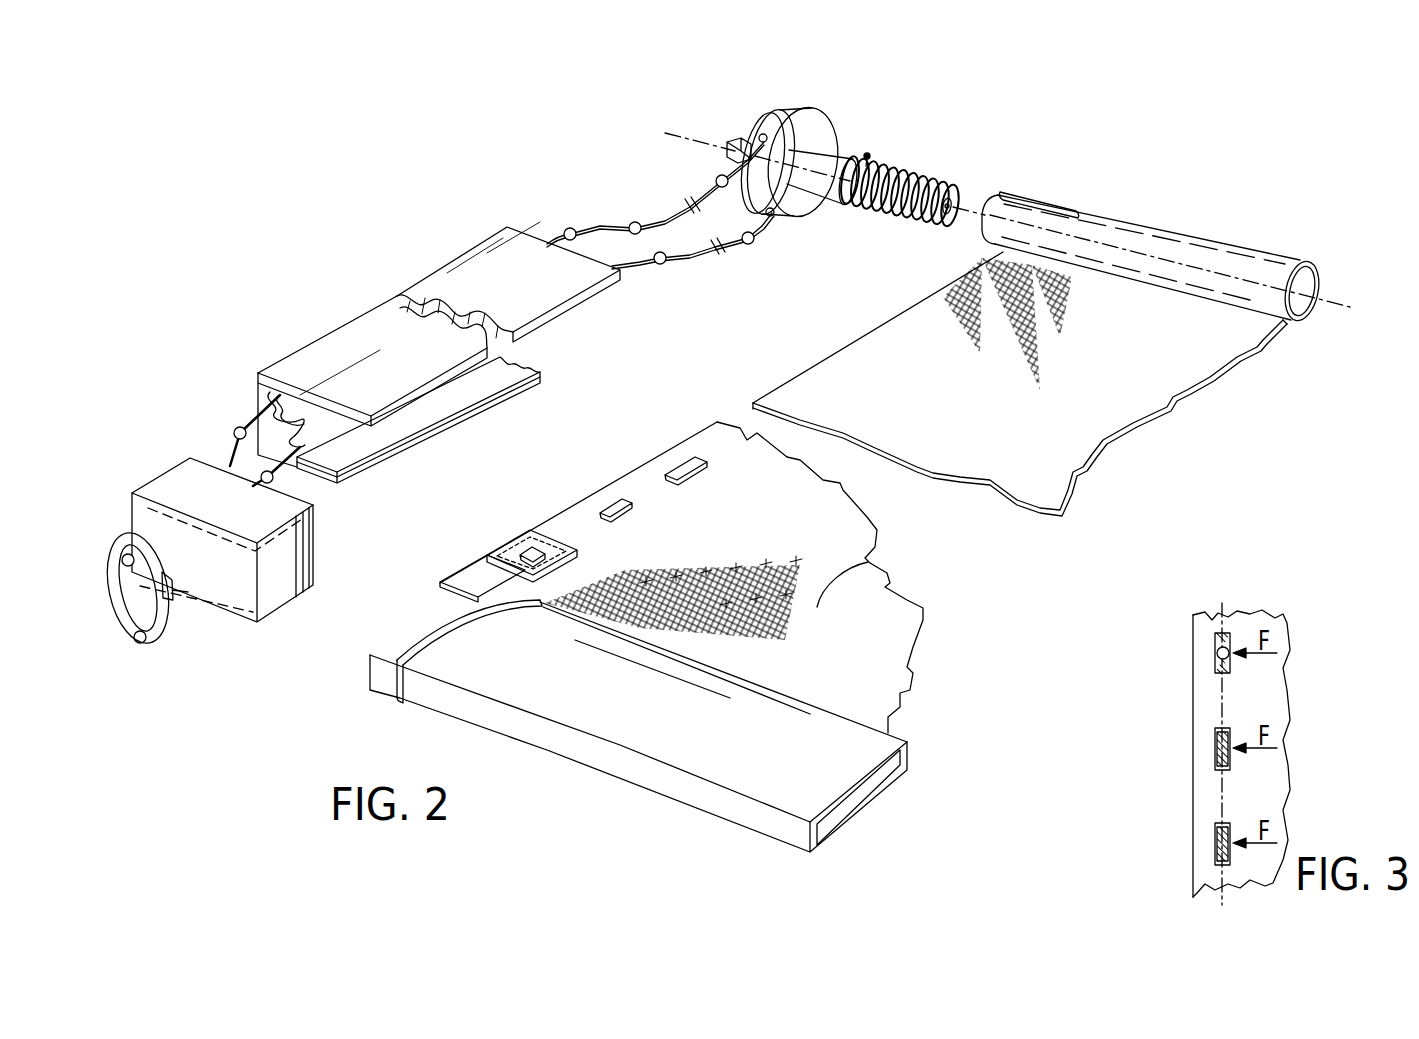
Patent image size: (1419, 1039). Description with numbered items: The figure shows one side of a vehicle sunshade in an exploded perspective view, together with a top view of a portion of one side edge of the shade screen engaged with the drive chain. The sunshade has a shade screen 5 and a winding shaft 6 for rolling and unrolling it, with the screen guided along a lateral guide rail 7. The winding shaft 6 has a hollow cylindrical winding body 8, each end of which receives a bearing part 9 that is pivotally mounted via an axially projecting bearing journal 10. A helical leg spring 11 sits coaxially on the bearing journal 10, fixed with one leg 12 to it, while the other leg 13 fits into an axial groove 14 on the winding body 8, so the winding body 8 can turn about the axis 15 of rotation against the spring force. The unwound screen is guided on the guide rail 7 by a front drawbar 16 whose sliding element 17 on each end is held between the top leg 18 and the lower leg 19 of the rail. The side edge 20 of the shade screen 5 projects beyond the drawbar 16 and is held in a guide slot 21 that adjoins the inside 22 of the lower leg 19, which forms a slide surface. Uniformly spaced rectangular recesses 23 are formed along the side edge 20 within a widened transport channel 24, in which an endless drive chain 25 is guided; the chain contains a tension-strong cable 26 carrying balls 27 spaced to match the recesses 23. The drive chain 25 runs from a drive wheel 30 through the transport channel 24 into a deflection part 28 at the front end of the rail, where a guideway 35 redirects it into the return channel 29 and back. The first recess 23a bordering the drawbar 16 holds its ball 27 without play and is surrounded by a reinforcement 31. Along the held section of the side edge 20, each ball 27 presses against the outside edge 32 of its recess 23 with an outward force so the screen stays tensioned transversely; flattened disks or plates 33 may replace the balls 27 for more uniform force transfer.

In FIG. 2, the shade screen 5 is at (893, 383).
In FIG. 3, the shade screen 5 is at (1257, 688).
In FIG. 2, the winding shaft 6 is at (1166, 222).
In FIG. 2, the guide rail 7 is at (406, 372).
In FIG. 2, the winding body 8 is at (1268, 268).
In FIG. 2, the bearing part 9 is at (837, 160).
In FIG. 2, the bearing journal 10 is at (738, 141).
In FIG. 2, the helical leg spring 11 is at (902, 176).
In FIG. 2, the leg 12 is at (960, 203).
In FIG. 2, the leg 13 is at (869, 157).
In FIG. 2, the axial groove 14 is at (1040, 200).
In FIG. 2, the axis of rotation 15 is at (678, 136).
In FIG. 2, the front drawbar 16 is at (655, 745).
In FIG. 2, the sliding element 17 is at (412, 640).
In FIG. 2, the top leg 18 is at (362, 355).
In FIG. 2, the lower leg 19 is at (378, 454).
In FIG. 2, the side edge 20 is at (648, 487).
In FIG. 3, the side edge 20 is at (1205, 878).
In FIG. 2, the guide slot 21 is at (234, 425).
In FIG. 2, the inside of the lower leg 22 is at (422, 404).
In FIG. 2, the recesses 23 is at (606, 505).
In FIG. 3, the recesses 23 is at (1212, 620).
In FIG. 2, the first recess 23a is at (532, 546).
In FIG. 2, the transport channel 24 is at (302, 468).
In FIG. 2, the drive chain 25 is at (647, 200).
In FIG. 2, the cable 26 is at (593, 214).
In FIG. 3, the cable 26 is at (1228, 615).
In FIG. 2, the balls 27 is at (720, 256).
In FIG. 3, the balls 27 is at (1217, 654).
In FIG. 2, the deflection part 28 is at (243, 575).
In FIG. 2, the return channel 29 is at (272, 404).
In FIG. 2, the drive wheel 30 is at (812, 137).
In FIG. 2, the reinforcement 31 is at (470, 563).
In FIG. 3, the outside edge 32 is at (1217, 670).
In FIG. 3, the plates 33 is at (1217, 750).
In FIG. 2, the guideway 35 is at (168, 622).